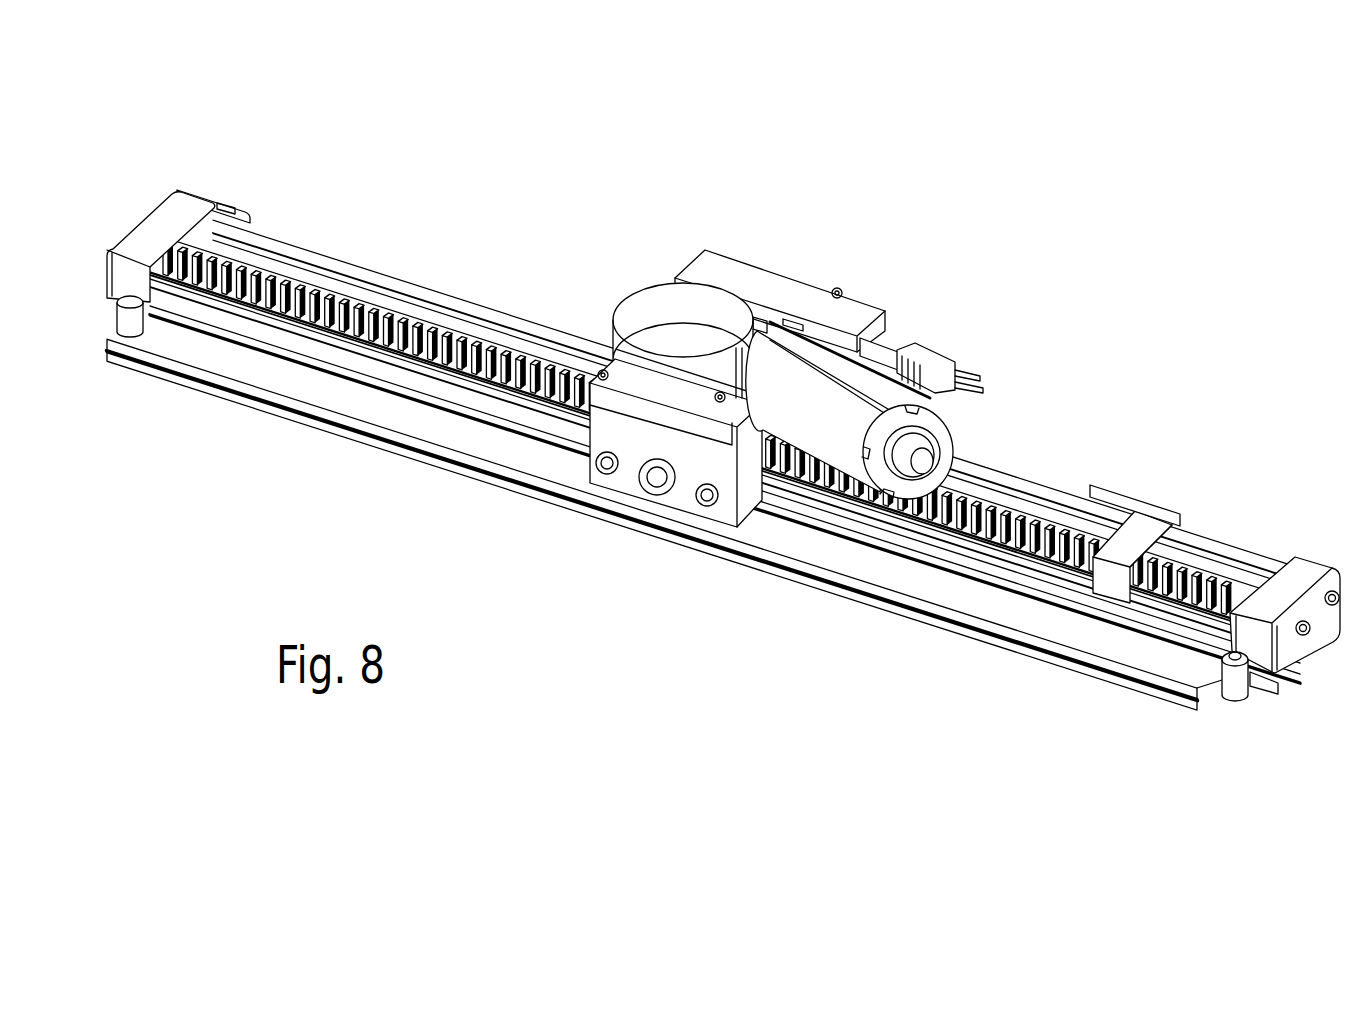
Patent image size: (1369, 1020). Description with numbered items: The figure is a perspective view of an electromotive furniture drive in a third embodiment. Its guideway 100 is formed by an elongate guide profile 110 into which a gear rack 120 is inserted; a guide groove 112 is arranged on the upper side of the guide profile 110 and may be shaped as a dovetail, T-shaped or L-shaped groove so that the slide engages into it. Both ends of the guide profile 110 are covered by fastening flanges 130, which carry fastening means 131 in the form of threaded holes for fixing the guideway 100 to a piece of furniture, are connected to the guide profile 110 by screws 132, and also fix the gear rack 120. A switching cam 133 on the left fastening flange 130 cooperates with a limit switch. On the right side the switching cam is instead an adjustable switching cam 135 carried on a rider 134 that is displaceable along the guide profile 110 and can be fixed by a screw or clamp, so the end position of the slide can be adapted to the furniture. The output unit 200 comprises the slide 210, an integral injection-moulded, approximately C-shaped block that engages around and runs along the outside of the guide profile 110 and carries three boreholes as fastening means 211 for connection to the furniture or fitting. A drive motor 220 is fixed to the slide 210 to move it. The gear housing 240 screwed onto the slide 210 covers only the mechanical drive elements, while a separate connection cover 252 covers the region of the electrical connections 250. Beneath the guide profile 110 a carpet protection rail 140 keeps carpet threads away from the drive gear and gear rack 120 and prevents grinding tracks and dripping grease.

The guideway 100 is at (404, 210).
The guide profile 110 is at (538, 327).
The guide groove 112 is at (470, 330).
The gear rack 120 is at (1017, 537).
The fastening flange 130 is at (142, 233).
The fastening means 131 is at (130, 327).
The screws 132 is at (1332, 606).
The switching cam 133 is at (235, 204).
The rider 134 is at (1147, 527).
The adjustable switching cam 135 is at (1095, 486).
The carpet protection rail 140 is at (318, 393).
The output unit 200 is at (947, 248).
The slide 210 is at (748, 512).
The fastening means 211 is at (707, 500).
The drive motor 220 is at (900, 399).
The gear housing 240 is at (694, 300).
The electrical connections 250 is at (940, 355).
The connection cover 252 is at (773, 287).